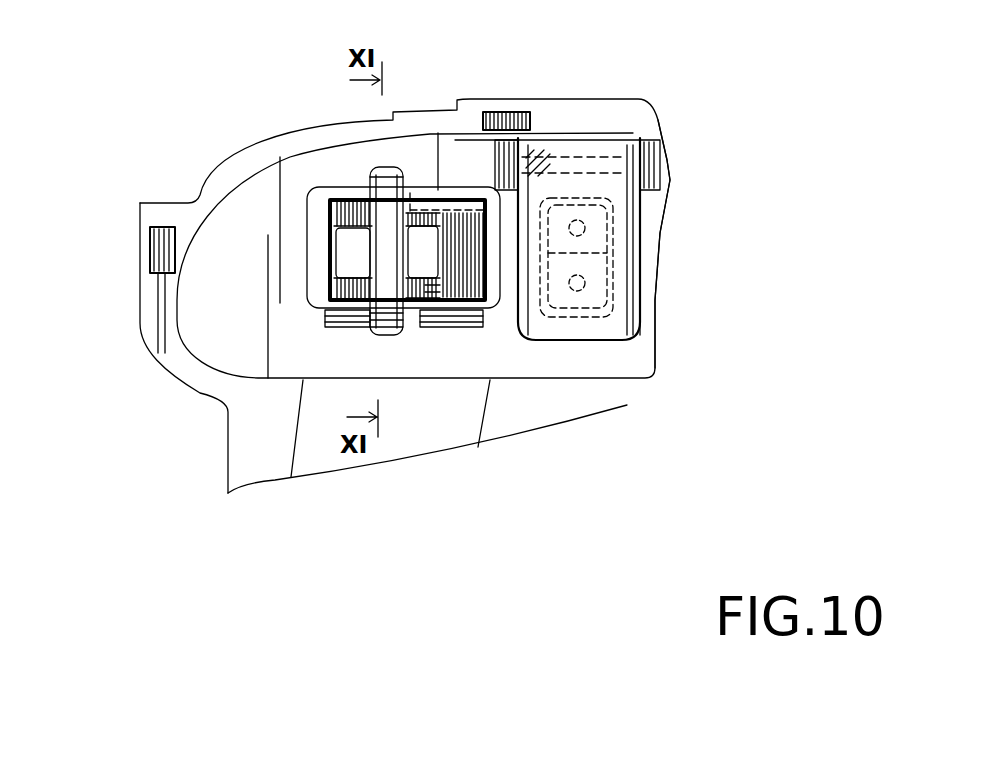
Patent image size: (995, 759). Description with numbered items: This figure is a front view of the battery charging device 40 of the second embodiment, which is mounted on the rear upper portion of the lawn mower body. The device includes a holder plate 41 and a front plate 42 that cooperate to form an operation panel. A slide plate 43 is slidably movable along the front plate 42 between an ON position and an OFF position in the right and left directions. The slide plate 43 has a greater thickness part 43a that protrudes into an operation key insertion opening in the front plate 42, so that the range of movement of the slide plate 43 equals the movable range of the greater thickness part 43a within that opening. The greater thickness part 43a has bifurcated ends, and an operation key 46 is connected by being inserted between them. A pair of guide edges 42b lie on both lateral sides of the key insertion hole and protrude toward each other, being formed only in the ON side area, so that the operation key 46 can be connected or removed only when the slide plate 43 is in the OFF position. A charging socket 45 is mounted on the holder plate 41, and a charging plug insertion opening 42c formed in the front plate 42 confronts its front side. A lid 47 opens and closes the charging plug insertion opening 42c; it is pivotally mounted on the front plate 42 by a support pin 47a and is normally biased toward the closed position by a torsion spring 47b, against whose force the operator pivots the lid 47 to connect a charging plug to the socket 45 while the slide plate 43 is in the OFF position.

The battery charging device 40 is at (622, 449).
The holder plate 41 is at (253, 430).
The front plate 42 is at (215, 297).
The guide edges 42b is at (458, 203).
The charging plug insertion opening 42c is at (630, 297).
The slide plate 43 is at (463, 277).
The greater thickness part 43a is at (347, 250).
The charging socket 45 is at (653, 243).
The operation key 46 is at (388, 318).
The lid 47 is at (595, 330).
The support pin 47a is at (600, 165).
The torsion spring 47b is at (555, 155).